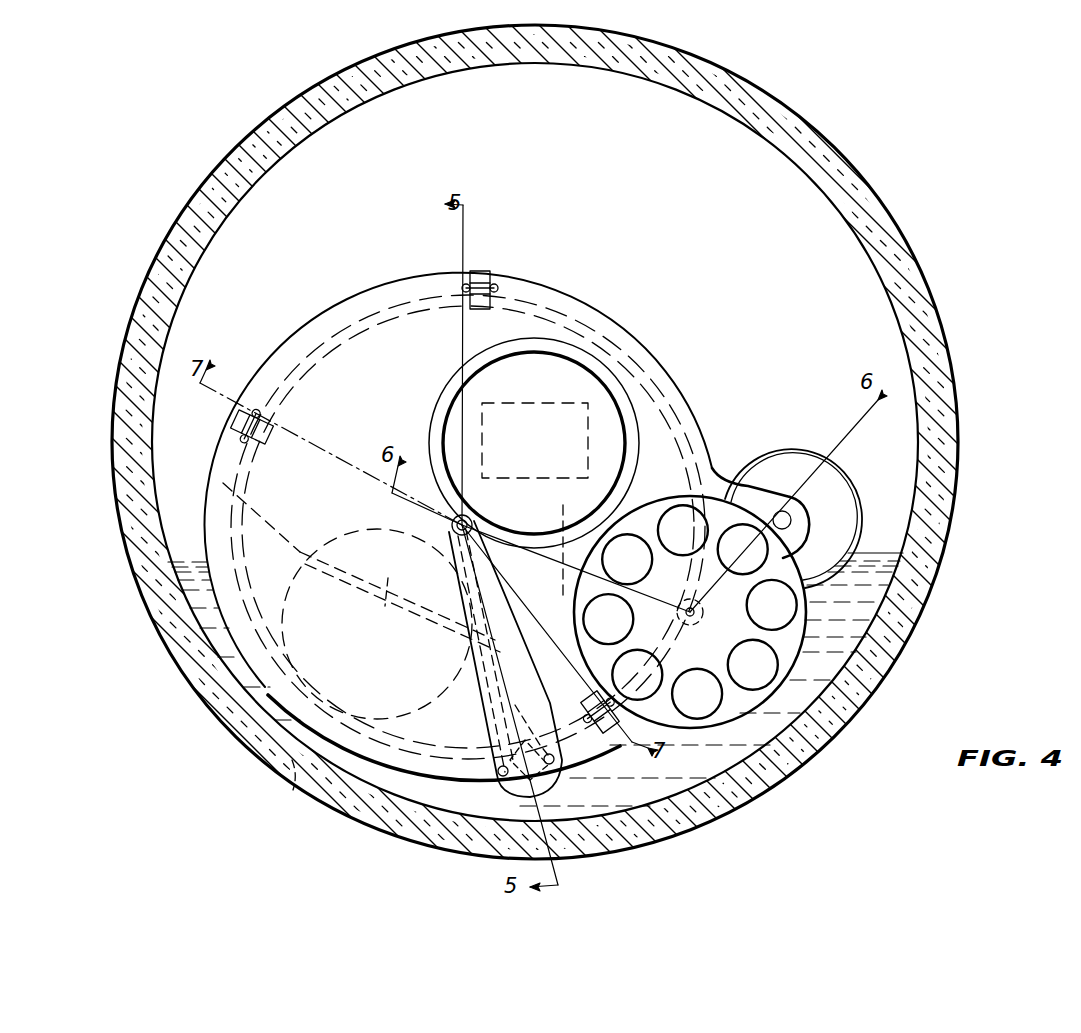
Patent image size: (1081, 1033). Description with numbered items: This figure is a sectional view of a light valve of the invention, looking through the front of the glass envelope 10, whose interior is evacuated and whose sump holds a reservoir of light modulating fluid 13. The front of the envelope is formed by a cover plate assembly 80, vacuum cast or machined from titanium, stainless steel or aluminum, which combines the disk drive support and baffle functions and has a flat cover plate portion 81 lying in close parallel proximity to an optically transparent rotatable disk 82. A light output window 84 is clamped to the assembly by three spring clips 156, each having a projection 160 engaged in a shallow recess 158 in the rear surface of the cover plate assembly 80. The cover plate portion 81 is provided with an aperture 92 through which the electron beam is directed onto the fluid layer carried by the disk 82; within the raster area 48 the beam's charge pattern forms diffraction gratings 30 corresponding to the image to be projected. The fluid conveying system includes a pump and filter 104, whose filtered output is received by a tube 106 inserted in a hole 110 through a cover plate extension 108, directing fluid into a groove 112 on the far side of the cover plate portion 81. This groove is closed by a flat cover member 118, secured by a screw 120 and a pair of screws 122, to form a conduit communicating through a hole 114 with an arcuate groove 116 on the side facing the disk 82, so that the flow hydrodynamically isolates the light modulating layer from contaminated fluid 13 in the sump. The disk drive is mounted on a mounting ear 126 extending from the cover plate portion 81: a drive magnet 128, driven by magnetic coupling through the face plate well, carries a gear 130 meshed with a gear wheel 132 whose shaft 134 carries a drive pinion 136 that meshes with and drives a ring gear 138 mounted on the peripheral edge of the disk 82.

The envelope 10 is at (912, 262).
The light modulating fluid 13 is at (925, 580).
The diffraction gratings 30 is at (535, 440).
The raster area 48 is at (588, 410).
The cover plate assembly 80 is at (318, 318).
The cover plate portion 81 is at (360, 401).
The rotatable disk 82 is at (368, 326).
The light output window 84 is at (270, 345).
The aperture 92 is at (520, 354).
The pump and filter 104 is at (295, 778).
The tube 106 is at (416, 695).
The cover plate extension 108 is at (497, 779).
The hole 110 is at (552, 789).
The groove 112 is at (500, 676).
The hole 114 is at (520, 600).
The arcuate groove 116 is at (484, 545).
The cover member 118 is at (470, 604).
The screw 120 is at (454, 516).
The screws 122 is at (549, 740).
The mounting ear 126 is at (752, 482).
The drive magnet 128 is at (816, 466).
The gear 130 is at (792, 522).
The gear wheel 132 is at (800, 626).
The shaft 134 is at (687, 606).
The drive pinion 136 is at (703, 612).
The ring gear 138 is at (696, 420).
The spring clips 156 is at (490, 276).
The recess 158 is at (471, 281).
The projection 160 is at (471, 304).